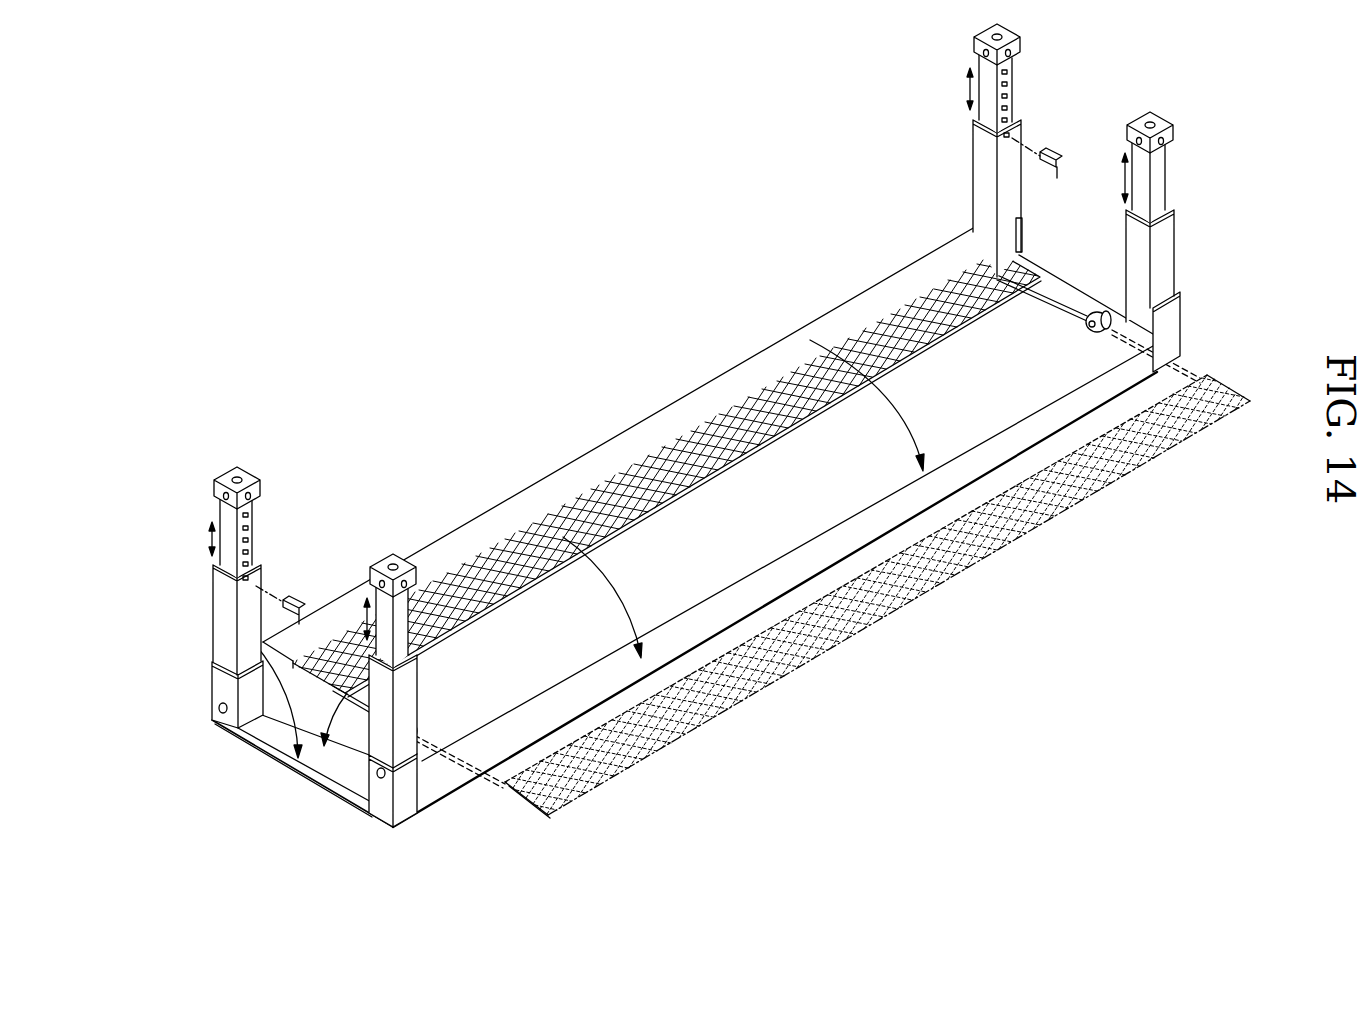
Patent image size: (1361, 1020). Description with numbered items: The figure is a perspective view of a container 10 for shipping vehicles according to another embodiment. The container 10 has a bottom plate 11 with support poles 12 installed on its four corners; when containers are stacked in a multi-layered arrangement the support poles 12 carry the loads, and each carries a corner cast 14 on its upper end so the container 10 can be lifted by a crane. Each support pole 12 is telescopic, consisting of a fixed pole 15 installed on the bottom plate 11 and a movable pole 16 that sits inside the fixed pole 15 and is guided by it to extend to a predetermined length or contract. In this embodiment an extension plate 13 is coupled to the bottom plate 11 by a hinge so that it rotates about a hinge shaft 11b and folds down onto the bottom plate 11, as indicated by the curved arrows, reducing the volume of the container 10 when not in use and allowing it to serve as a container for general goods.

The container 10 is at (549, 292).
The bottom plate 11 is at (505, 508).
The hinge shaft 11b is at (412, 726).
The support pole 12 is at (645, 425).
The extension plate 13 is at (588, 487).
The corner cast 14 is at (1021, 44).
The fixed pole 15 is at (982, 157).
The movable pole 16 is at (982, 68).